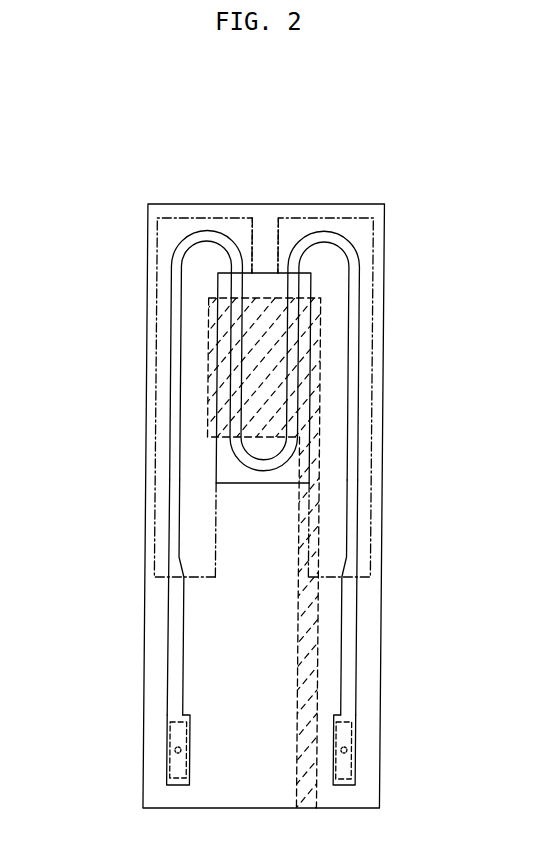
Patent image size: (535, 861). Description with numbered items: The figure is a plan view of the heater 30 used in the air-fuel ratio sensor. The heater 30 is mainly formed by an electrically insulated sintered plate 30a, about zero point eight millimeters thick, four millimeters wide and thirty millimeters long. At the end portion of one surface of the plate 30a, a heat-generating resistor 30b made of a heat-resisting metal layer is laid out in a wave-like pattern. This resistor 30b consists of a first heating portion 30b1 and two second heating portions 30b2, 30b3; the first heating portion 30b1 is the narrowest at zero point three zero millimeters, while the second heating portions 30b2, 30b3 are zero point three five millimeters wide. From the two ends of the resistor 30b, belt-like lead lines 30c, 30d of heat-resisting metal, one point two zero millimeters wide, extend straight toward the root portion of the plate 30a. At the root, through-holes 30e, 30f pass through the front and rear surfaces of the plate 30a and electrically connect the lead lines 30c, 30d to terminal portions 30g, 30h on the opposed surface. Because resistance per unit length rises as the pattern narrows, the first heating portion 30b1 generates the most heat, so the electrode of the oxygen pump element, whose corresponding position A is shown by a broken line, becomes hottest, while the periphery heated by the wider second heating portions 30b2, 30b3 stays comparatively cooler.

The heater 30 is at (407, 183).
The electrically insulated sintered plate 30a is at (166, 204).
The heat-generating resistor 30b is at (170, 434).
The first heating portion 30b1 is at (256, 272).
The second heating portion 30b2 is at (146, 257).
The second heating portion 30b3 is at (381, 251).
The lead line 30c is at (169, 626).
The lead line 30d is at (358, 628).
The through-hole 30e is at (177, 746).
The through-hole 30f is at (359, 744).
The terminal portion 30g is at (173, 763).
The terminal portion 30h is at (359, 781).
The position corresponding to the electrode A is at (319, 381).